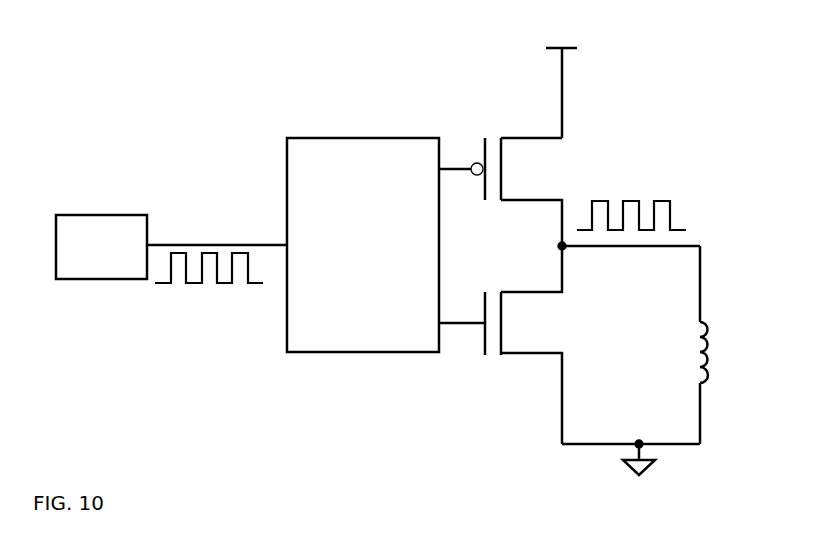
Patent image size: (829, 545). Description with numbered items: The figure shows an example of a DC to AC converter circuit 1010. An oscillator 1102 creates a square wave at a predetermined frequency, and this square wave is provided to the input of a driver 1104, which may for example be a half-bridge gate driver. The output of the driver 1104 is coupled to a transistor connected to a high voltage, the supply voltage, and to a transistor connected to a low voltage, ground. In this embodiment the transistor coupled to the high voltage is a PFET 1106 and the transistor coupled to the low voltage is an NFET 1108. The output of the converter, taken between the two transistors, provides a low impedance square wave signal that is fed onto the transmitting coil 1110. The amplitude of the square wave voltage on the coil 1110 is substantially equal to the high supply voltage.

The transmitter circuit 1010 is at (186, 82).
The oscillator 1102 is at (141, 218).
The driver 1104 is at (390, 141).
The PFET 1106 is at (565, 164).
The NFET 1108 is at (553, 338).
The transmitting coil 1110 is at (708, 352).